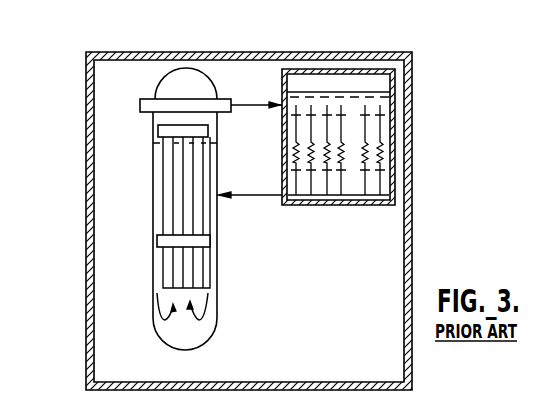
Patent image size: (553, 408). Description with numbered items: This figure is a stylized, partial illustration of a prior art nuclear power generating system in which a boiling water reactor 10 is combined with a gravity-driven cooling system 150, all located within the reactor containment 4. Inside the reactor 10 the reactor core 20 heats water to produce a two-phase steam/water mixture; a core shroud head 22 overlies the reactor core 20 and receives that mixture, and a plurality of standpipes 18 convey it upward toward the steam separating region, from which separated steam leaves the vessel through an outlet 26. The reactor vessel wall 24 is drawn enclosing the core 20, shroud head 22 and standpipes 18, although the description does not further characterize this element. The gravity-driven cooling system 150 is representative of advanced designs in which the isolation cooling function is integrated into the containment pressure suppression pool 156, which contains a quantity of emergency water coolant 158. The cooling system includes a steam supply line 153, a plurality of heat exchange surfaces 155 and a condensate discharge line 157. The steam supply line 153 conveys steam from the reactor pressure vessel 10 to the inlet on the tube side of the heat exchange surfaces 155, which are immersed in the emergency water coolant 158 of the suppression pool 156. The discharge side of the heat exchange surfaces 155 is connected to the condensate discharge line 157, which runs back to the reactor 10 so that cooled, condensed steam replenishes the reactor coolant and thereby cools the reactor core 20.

The reactor containment 4 is at (412, 72).
The nuclear boiling water reactor 10 is at (156, 98).
The standpipes 18 is at (163, 168).
The reactor core 20 is at (157, 292).
The core shroud head 22 is at (157, 244).
The tube wall 24 is at (153, 202).
The outlet 26 is at (158, 131).
The gravity-driven cooling system 150 is at (304, 247).
The steam supply line 153 is at (258, 105).
The heat exchange surfaces 155 is at (296, 147).
The suppression pool 156 is at (360, 204).
The condensate discharge line 157 is at (261, 195).
The emergency water coolant 158 is at (375, 175).